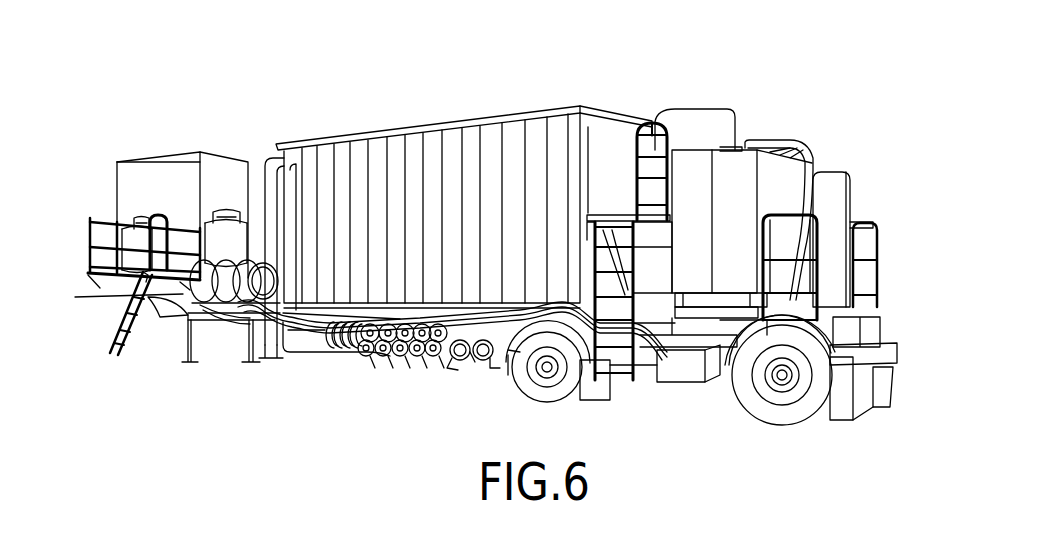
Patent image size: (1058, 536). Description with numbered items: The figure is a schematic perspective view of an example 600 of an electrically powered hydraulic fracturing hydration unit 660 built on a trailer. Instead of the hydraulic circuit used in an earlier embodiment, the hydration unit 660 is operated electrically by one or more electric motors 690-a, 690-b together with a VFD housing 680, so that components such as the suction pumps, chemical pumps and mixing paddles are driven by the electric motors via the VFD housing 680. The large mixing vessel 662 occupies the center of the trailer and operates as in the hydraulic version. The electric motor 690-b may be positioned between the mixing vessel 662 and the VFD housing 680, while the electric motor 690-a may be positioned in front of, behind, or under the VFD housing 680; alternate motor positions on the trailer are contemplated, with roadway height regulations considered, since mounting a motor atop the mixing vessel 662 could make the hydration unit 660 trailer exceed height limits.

The electrically powered hydraulic fracturing hydration unit example 600 is at (760, 78).
The mixing vessel 662 is at (456, 114).
The hydration unit 660 is at (373, 402).
The VFD housing 680 is at (142, 172).
The electric motor 690-a is at (142, 243).
The electric motor 690-b is at (233, 233).